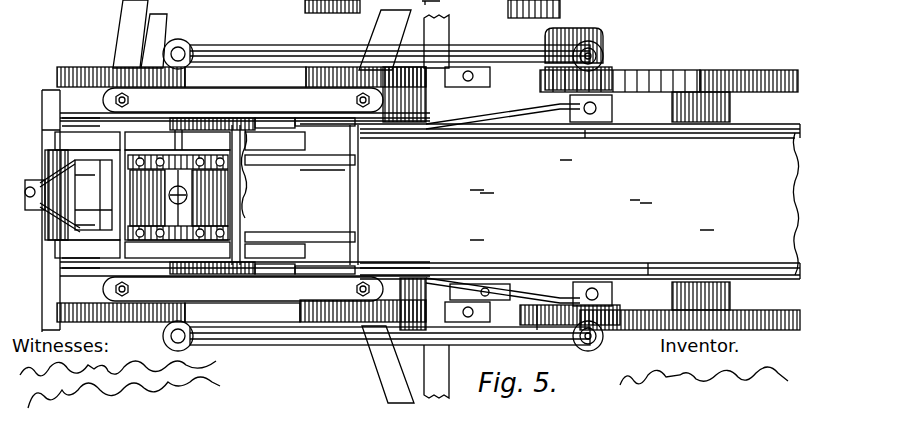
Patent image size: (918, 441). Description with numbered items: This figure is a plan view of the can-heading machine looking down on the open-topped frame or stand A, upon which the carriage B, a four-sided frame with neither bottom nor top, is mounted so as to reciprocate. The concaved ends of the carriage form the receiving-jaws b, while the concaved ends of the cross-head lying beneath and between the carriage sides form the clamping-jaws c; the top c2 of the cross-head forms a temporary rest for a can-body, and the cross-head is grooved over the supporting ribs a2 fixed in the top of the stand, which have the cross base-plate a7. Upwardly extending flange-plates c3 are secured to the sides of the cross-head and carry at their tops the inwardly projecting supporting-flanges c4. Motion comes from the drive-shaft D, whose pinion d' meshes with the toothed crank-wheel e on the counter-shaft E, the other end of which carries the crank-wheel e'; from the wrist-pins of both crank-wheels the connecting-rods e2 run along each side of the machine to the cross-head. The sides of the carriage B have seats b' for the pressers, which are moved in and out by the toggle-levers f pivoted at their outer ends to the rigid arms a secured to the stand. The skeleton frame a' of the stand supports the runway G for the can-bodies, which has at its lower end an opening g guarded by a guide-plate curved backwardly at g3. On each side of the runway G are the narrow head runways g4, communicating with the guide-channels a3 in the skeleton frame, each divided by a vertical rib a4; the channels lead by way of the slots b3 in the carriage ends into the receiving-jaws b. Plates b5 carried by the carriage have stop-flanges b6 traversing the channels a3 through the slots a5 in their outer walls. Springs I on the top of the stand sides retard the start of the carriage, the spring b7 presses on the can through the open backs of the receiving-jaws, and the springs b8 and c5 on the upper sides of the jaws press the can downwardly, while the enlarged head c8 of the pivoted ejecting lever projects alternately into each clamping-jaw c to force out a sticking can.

The stand A is at (42, 108).
The carriage B is at (214, 207).
The drive-shaft D is at (588, 30).
The counter-shaft E is at (433, 3).
The runway G is at (550, 201).
The springs I is at (505, 302).
The rigid arms a is at (305, 203).
The skeleton frame a' is at (374, 194).
The supporting ribs a2 is at (300, 162).
The guide-channels a3 is at (300, 120).
The vertical rib a4 is at (306, 122).
The slots a5 is at (182, 114).
The cross base-plate a7 is at (299, 195).
The receiving-jaws b is at (105, 195).
The seats b' is at (327, 184).
The slots b3 is at (72, 118).
The plates b5 is at (235, 108).
The stop-flanges b6 is at (138, 112).
The spring b7 is at (93, 216).
The springs b8 is at (104, 197).
The clamping-jaws c is at (205, 196).
The top of cross-head c2 is at (177, 193).
The flange-plates c3 is at (165, 134).
The supporting-flanges c4 is at (180, 195).
The springs c5 is at (210, 247).
The enlarged head c8 is at (168, 195).
The pinion d' is at (540, 335).
The toothed crank-wheel e is at (690, 331).
The crank-wheel e' is at (669, 69).
The connecting-rods e2 is at (273, 50).
The toggle-levers f is at (122, 18).
The opening g is at (322, 191).
The curved guide g3 is at (240, 218).
The narrow runways g4 is at (586, 134).